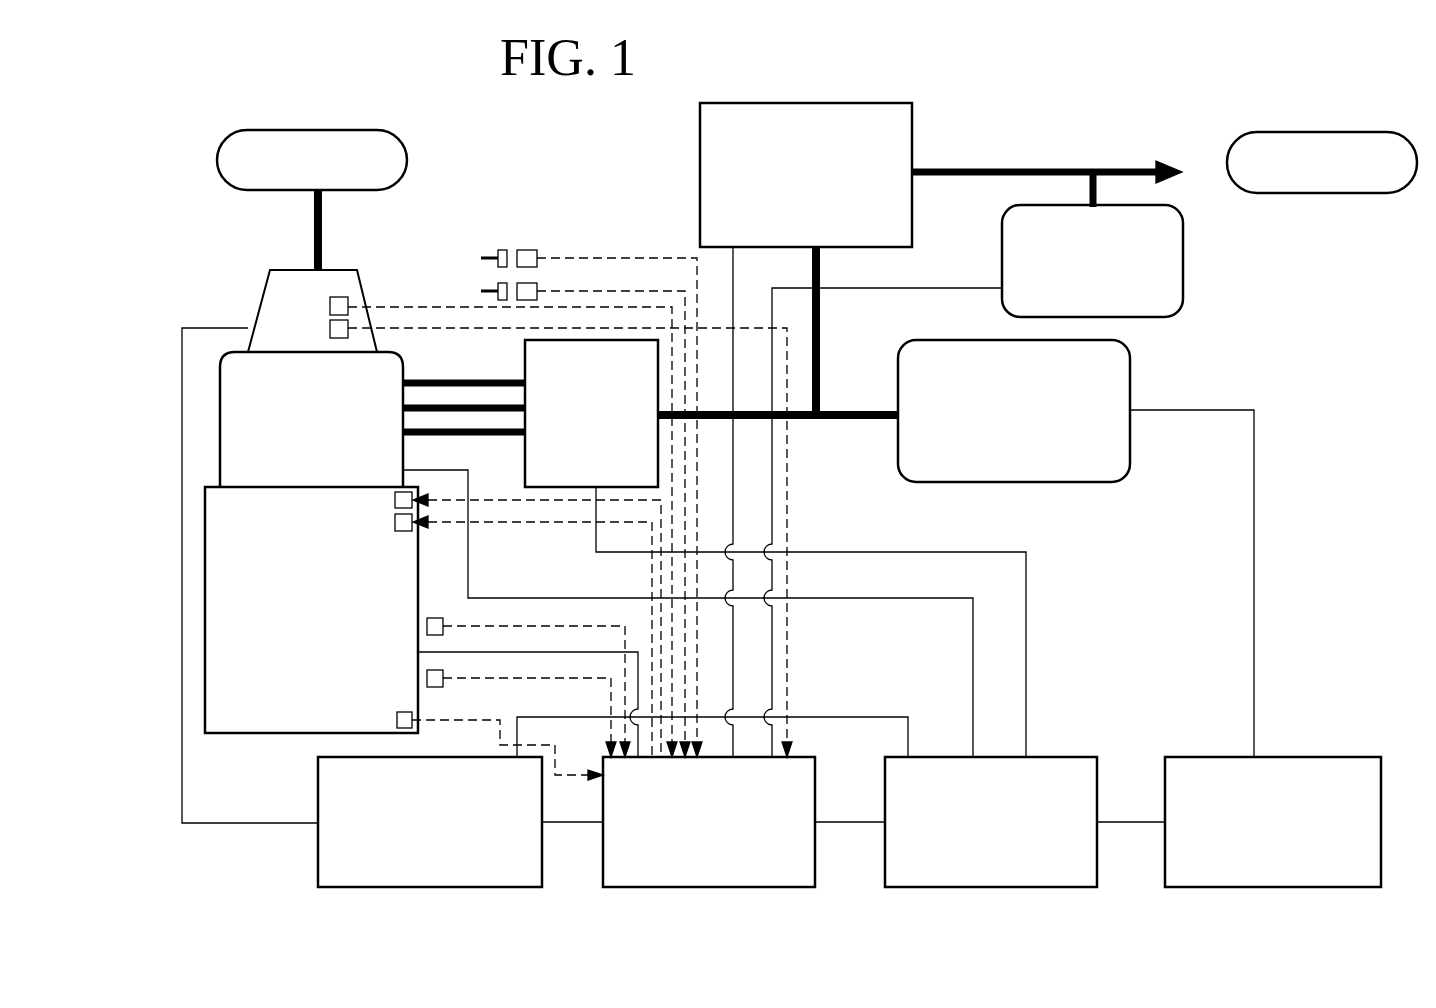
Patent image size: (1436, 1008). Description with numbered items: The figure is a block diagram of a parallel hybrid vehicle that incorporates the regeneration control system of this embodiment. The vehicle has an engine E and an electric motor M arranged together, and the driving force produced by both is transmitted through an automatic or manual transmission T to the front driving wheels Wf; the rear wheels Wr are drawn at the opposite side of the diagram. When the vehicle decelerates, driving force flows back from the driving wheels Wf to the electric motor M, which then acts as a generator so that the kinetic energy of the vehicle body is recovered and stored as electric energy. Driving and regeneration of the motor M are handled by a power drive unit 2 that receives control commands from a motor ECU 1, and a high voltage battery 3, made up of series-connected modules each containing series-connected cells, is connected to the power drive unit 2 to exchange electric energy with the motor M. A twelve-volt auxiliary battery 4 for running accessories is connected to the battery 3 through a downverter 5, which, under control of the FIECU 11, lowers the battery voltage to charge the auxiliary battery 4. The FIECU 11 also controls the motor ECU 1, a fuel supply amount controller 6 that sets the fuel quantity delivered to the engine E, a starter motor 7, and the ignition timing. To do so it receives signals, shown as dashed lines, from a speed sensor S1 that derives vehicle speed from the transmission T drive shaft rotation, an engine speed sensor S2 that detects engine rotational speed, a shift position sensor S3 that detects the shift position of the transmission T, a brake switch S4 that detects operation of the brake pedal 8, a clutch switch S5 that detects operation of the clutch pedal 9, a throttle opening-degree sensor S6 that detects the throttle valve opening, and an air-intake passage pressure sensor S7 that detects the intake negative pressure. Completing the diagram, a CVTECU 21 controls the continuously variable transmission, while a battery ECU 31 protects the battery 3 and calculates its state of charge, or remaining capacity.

The driving wheels Wf is at (407, 160).
The rear wheel Wr is at (1353, 193).
The transmission T is at (312, 311).
The electric motor M is at (311, 419).
The engine E is at (311, 610).
The motor ECU 1 is at (991, 822).
The power drive unit 2 is at (591, 413).
The high voltage battery 3 is at (1014, 411).
The auxiliary battery 4 is at (1092, 261).
The downverter 5 is at (806, 175).
The fuel supply amount controller 6 is at (394, 497).
The starter motor 7 is at (394, 522).
The brake pedal 8 is at (497, 251).
The clutch pedal 9 is at (497, 289).
The FIECU 11 is at (709, 822).
The CVTECU 21 is at (430, 822).
The battery ECU 31 is at (1273, 822).
The speed sensor S1 is at (348, 330).
The engine speed sensor S2 is at (397, 717).
The shift position sensor S3 is at (348, 300).
The brake switch S4 is at (537, 252).
The clutch switch S5 is at (537, 286).
The throttle opening-degree sensor S6 is at (443, 686).
The air-intake passage pressure sensor S7 is at (434, 618).